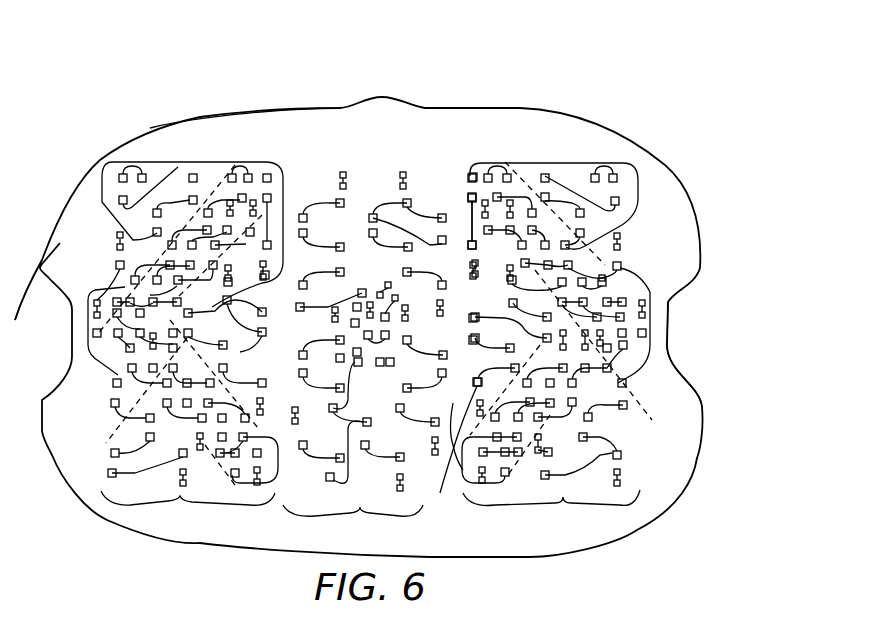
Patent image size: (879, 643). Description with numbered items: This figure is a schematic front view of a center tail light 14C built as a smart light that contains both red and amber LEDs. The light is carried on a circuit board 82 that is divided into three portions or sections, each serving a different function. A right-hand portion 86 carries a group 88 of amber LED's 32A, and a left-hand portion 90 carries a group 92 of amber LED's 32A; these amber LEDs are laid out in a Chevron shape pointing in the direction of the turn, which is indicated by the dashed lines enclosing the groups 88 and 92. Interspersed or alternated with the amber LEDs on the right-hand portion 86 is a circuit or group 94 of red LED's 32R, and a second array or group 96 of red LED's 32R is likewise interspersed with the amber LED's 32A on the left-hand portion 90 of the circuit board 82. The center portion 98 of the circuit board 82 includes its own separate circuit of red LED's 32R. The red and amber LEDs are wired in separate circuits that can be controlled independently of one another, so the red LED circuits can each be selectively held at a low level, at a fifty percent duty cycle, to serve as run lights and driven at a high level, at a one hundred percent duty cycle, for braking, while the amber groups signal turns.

The electrode array substrate 14C is at (649, 132).
The circuit board 82 is at (207, 128).
The amber LED 32A is at (186, 226).
The red LED 32R is at (287, 190).
The group of red LED's 94 is at (473, 70).
The second group of red LED's 96 is at (184, 348).
The center portion 98 is at (382, 355).
The right-hand portion 86 is at (660, 377).
The group of amber LED's 88 is at (597, 357).
The left-hand portion 90 is at (23, 304).
The group of amber LED's 92 is at (106, 443).